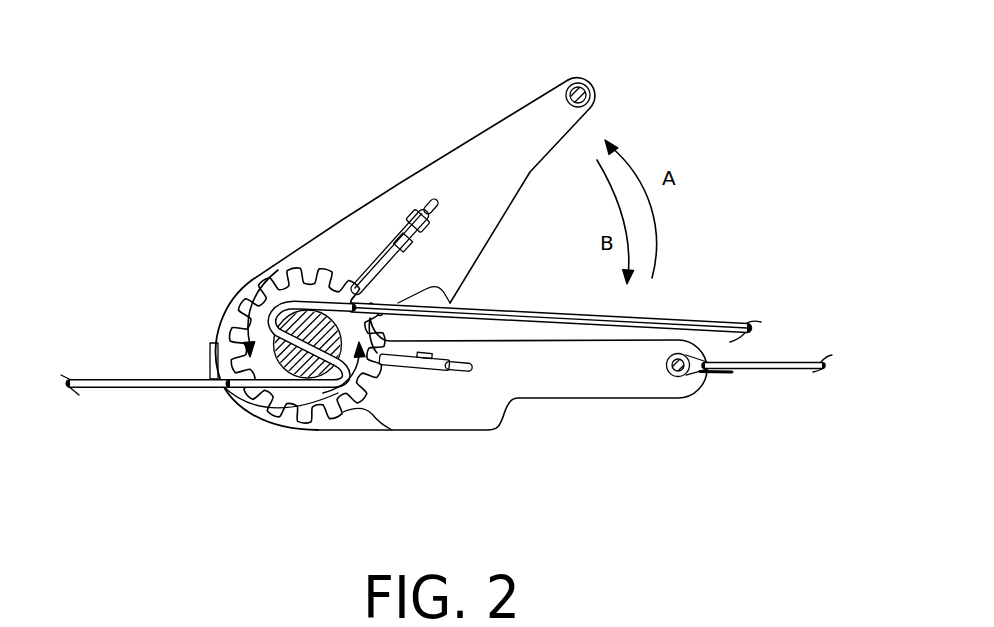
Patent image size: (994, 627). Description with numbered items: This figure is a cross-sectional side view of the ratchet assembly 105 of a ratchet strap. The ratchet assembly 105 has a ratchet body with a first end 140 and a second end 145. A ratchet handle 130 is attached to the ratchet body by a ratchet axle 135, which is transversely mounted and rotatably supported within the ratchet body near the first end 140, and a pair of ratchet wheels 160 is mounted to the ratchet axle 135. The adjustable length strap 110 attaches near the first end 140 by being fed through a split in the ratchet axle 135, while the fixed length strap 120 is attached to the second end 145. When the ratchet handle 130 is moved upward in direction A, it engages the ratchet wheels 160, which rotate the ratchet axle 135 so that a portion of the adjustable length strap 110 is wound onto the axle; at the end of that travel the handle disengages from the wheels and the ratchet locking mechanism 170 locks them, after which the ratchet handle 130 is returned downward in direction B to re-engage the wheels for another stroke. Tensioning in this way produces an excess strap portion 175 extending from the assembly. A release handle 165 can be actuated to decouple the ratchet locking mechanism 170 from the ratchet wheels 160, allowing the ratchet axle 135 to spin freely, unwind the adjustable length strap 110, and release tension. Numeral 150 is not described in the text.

The ratchet assembly 105 is at (704, 76).
The adjustable length strap 110 is at (118, 380).
The fixed length strap 120 is at (790, 356).
The ratchet handle 130 is at (527, 98).
The ratchet axle 135 is at (296, 375).
The first end 140 is at (176, 300).
The second end 145 is at (716, 408).
The strap wrap 150 is at (314, 343).
The ratchet wheels 160 is at (333, 400).
The release handle 165 is at (427, 213).
The ratchet locking mechanism 170 is at (377, 263).
The excess strap portion 175 is at (700, 318).